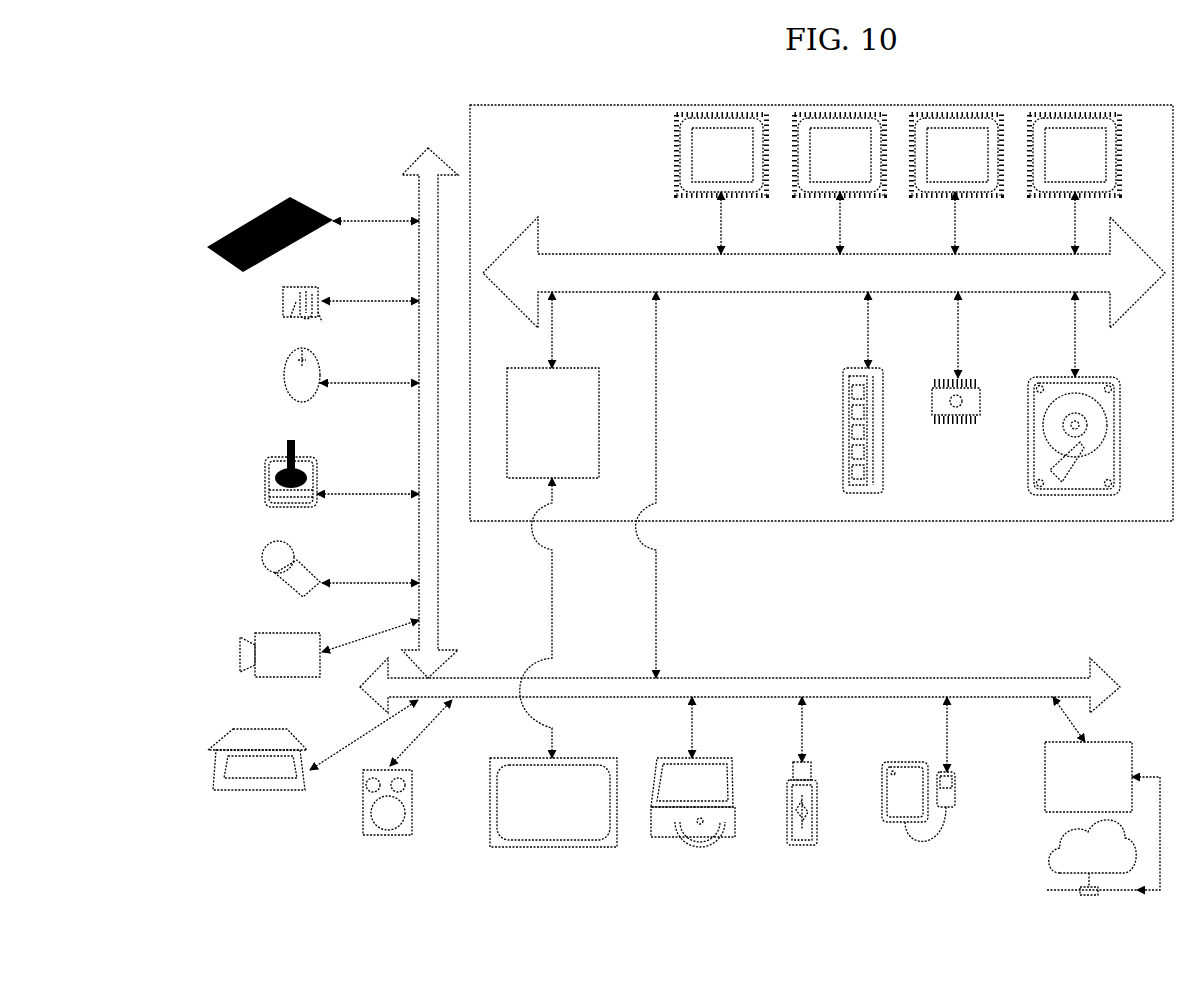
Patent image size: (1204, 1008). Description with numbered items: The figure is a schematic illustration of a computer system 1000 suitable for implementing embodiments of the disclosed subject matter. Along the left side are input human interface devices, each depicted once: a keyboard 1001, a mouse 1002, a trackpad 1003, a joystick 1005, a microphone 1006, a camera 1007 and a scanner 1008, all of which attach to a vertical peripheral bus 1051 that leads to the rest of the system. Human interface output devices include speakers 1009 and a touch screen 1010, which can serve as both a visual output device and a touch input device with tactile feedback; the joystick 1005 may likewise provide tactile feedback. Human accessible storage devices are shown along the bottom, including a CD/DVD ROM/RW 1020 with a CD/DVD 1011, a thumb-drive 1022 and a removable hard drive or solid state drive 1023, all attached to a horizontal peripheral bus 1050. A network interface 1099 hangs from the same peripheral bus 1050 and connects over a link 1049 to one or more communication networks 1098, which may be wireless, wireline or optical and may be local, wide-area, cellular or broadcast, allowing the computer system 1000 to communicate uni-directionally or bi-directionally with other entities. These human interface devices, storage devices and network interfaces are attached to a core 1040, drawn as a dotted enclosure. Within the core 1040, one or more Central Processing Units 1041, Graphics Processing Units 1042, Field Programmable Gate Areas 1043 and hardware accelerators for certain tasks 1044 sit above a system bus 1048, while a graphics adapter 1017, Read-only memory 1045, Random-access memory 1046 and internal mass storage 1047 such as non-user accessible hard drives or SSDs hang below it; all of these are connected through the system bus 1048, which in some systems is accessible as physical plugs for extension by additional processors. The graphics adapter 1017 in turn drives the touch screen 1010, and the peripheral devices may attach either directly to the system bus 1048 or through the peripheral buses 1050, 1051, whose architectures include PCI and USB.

The computer system 1000 is at (226, 84).
The keyboard 1001 is at (207, 249).
The mouse 1002 is at (284, 375).
The trackpad 1003 is at (283, 305).
The joystick 1005 is at (265, 495).
The microphone 1006 is at (263, 563).
The camera 1007 is at (240, 656).
The scanner 1008 is at (208, 782).
The speakers 1009 is at (388, 835).
The touch screen 1010 is at (553, 847).
The CD/DVD 1011 is at (675, 837).
The graphics adapter 1017 is at (600, 455).
The CD/DVD ROM/RW 1020 is at (730, 837).
The thumb-drive 1022 is at (800, 845).
The removable hard drive or solid state drive 1023 is at (883, 822).
The core 1040 is at (818, 521).
The Central Processing Unit 1041 is at (690, 193).
The Graphics Processing Unit 1042 is at (808, 193).
The Field Programmable Gate Area 1043 is at (925, 193).
The hardware accelerator 1044 is at (1043, 193).
The Read-only memory 1045 is at (948, 425).
The Random-access memory 1046 is at (843, 425).
The internal mass storage 1047 is at (1033, 377).
The system bus 1048 is at (798, 293).
The network connection 1049 is at (1160, 785).
The peripheral bus 1050 is at (952, 678).
The peripheral bus 1051 is at (418, 180).
The communication network 1098 is at (1048, 862).
The network interface 1099 is at (1045, 745).